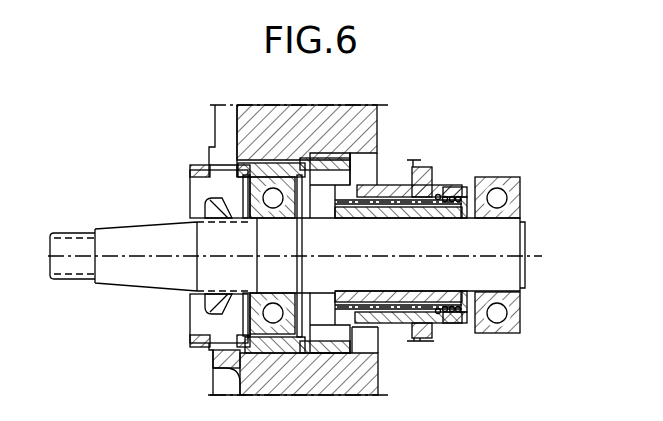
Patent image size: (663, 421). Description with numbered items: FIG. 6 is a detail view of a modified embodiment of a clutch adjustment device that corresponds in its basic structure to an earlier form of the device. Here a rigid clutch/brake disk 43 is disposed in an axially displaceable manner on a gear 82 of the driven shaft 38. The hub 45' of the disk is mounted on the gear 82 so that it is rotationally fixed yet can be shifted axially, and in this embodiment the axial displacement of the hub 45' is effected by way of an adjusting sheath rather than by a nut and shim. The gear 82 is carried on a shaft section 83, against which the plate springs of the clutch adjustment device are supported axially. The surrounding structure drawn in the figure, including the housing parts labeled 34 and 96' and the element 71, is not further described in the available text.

The housing 34 is at (302, 122).
The seal housing 96' is at (200, 250).
The driven shaft 38 is at (125, 235).
The gear 82 is at (338, 317).
The hub 45' is at (398, 213).
The clutch/brake disk 43 is at (428, 168).
The locking ring 71 is at (438, 190).
The shaft section 83 is at (498, 238).